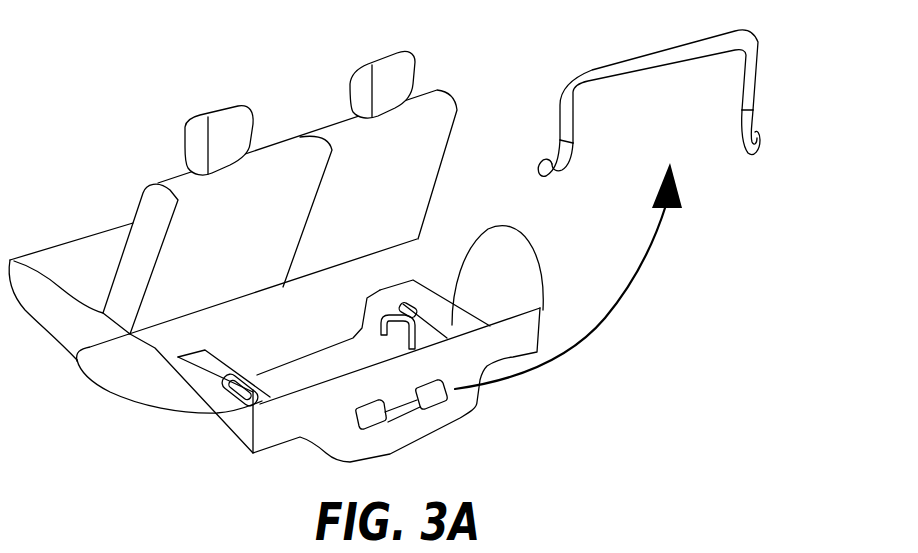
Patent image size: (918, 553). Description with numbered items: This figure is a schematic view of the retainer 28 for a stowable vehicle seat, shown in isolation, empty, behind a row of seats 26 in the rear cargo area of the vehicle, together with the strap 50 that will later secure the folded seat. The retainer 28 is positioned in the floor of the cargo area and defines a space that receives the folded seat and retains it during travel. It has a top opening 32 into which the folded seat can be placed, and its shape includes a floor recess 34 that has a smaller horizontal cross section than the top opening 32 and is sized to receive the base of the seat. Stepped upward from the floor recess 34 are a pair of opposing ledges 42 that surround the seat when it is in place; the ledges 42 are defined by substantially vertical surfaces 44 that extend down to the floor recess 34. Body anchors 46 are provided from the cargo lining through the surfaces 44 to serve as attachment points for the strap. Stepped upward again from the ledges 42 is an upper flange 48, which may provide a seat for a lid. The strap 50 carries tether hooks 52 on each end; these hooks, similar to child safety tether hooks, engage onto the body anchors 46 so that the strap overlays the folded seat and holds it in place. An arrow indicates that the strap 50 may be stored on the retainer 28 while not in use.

The row of seats 26 is at (300, 155).
The retainer 28 is at (467, 417).
The top opening 32 is at (372, 275).
The floor recess 34 is at (345, 377).
The ledges 42 is at (197, 375).
The vertical surfaces 44 is at (369, 323).
The body anchors 46 is at (233, 398).
The upper flange 48 is at (130, 385).
The strap 50 is at (663, 55).
The tether hooks 52 is at (766, 142).